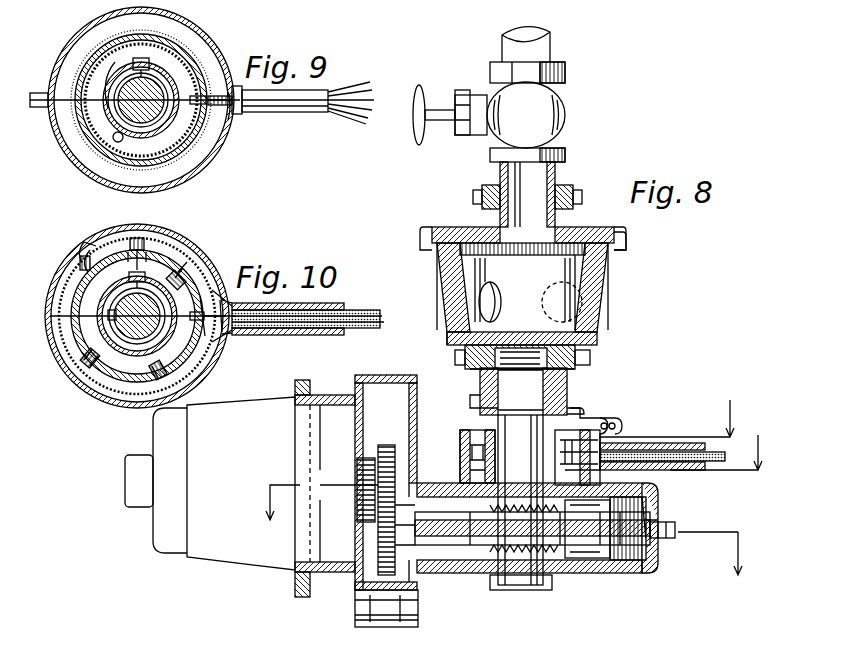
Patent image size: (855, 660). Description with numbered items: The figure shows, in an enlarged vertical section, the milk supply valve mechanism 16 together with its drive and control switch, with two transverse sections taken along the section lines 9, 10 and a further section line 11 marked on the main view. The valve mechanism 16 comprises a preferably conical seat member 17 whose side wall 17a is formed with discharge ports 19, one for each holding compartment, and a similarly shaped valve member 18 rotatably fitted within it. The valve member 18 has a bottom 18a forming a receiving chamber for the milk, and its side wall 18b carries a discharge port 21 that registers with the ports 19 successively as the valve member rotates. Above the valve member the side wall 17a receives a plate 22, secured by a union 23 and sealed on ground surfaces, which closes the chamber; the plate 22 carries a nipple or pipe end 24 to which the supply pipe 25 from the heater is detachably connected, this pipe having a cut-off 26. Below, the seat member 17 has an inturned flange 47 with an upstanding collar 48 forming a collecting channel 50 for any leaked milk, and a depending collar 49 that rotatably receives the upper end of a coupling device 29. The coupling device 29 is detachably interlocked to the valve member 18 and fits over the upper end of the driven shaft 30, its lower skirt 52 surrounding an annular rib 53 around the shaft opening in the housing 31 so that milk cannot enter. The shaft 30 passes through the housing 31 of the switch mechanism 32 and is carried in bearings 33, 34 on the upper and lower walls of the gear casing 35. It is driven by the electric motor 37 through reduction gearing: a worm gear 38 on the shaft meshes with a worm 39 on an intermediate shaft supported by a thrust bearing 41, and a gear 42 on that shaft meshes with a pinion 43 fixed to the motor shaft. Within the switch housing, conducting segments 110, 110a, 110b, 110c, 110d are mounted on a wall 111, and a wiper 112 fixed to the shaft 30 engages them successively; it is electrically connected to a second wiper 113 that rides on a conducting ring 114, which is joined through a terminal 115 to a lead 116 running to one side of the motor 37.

In FIG. 8, the section line 9— 9 is at (667, 418).
In FIG. 8, the section line 10— 10 is at (686, 436).
In FIG. 8, the section line 11— 11 is at (507, 517).
In FIG. 8, the valve mechanism 16 is at (637, 238).
In FIG. 8, the seat member 17 is at (442, 298).
In FIG. 8, the side wall 17a is at (598, 318).
In FIG. 8, the valve member 18 is at (610, 275).
In FIG. 8, the bottom 18a is at (452, 335).
In FIG. 8, the side wall 18b is at (440, 280).
In FIG. 8, the discharge ports 19 is at (556, 288).
In FIG. 8, the discharge port 21 is at (496, 290).
In FIG. 8, the plate 22 is at (470, 245).
In FIG. 8, the union 23 is at (432, 235).
In FIG. 8, the nipple or pipe end 24 is at (560, 222).
In FIG. 8, the supply pipe 25 is at (556, 170).
In FIG. 8, the cut-off 26 is at (548, 115).
In FIG. 8, the coupling device 29 is at (568, 395).
In FIG. 9, the driven shaft 30 is at (176, 128).
In FIG. 10, the driven shaft 30 is at (128, 340).
In FIG. 8, the driven shaft 30 is at (521, 502).
In FIG. 9, the housing 31 is at (190, 180).
In FIG. 10, the housing 31 is at (180, 255).
In FIG. 8, the housing 31 is at (585, 430).
In FIG. 10, the switch mechanism 32 is at (70, 280).
In FIG. 8, the switch mechanism 32 is at (478, 432).
In FIG. 8, the bearing 33 is at (560, 505).
In FIG. 8, the bearing 34 is at (498, 575).
In FIG. 8, the gear casing 35 is at (630, 573).
In FIG. 8, the electric motor 37 is at (210, 483).
In FIG. 8, the worm gear 38 is at (660, 545).
In FIG. 8, the worm 39 is at (556, 575).
In FIG. 8, the thrust bearing 41 is at (590, 560).
In FIG. 8, the gear 42 is at (386, 445).
In FIG. 8, the pinion 43 is at (365, 458).
In FIG. 8, the inturned flange 47 is at (466, 358).
In FIG. 8, the upstanding collar 48 is at (596, 338).
In FIG. 8, the depending collar 49 is at (576, 372).
In FIG. 8, the collecting channel 50 is at (592, 358).
In FIG. 8, the skirt 52 is at (475, 405).
In FIG. 8, the flange or annular rib 53 is at (600, 408).
In FIG. 10, the conducting segment 110 is at (78, 302).
In FIG. 10, the conducting segment 110a is at (142, 250).
In FIG. 10, the conducting segment 110b is at (190, 270).
In FIG. 10, the conducting segment 110c is at (158, 378).
In FIG. 10, the conducting segment 110d is at (86, 362).
In FIG. 9, the wall 111 is at (104, 145).
In FIG. 10, the wall 111 is at (100, 325).
In FIG. 8, the wall 111 is at (622, 426).
In FIG. 10, the wiper 112 is at (90, 250).
In FIG. 9, the wiper 113 is at (98, 62).
In FIG. 9, the conducting ring 114 is at (122, 160).
In FIG. 9, the terminal 115 is at (213, 98).
In FIG. 9, the lead 116 is at (230, 128).
In FIG. 10, the lead 116 is at (298, 316).